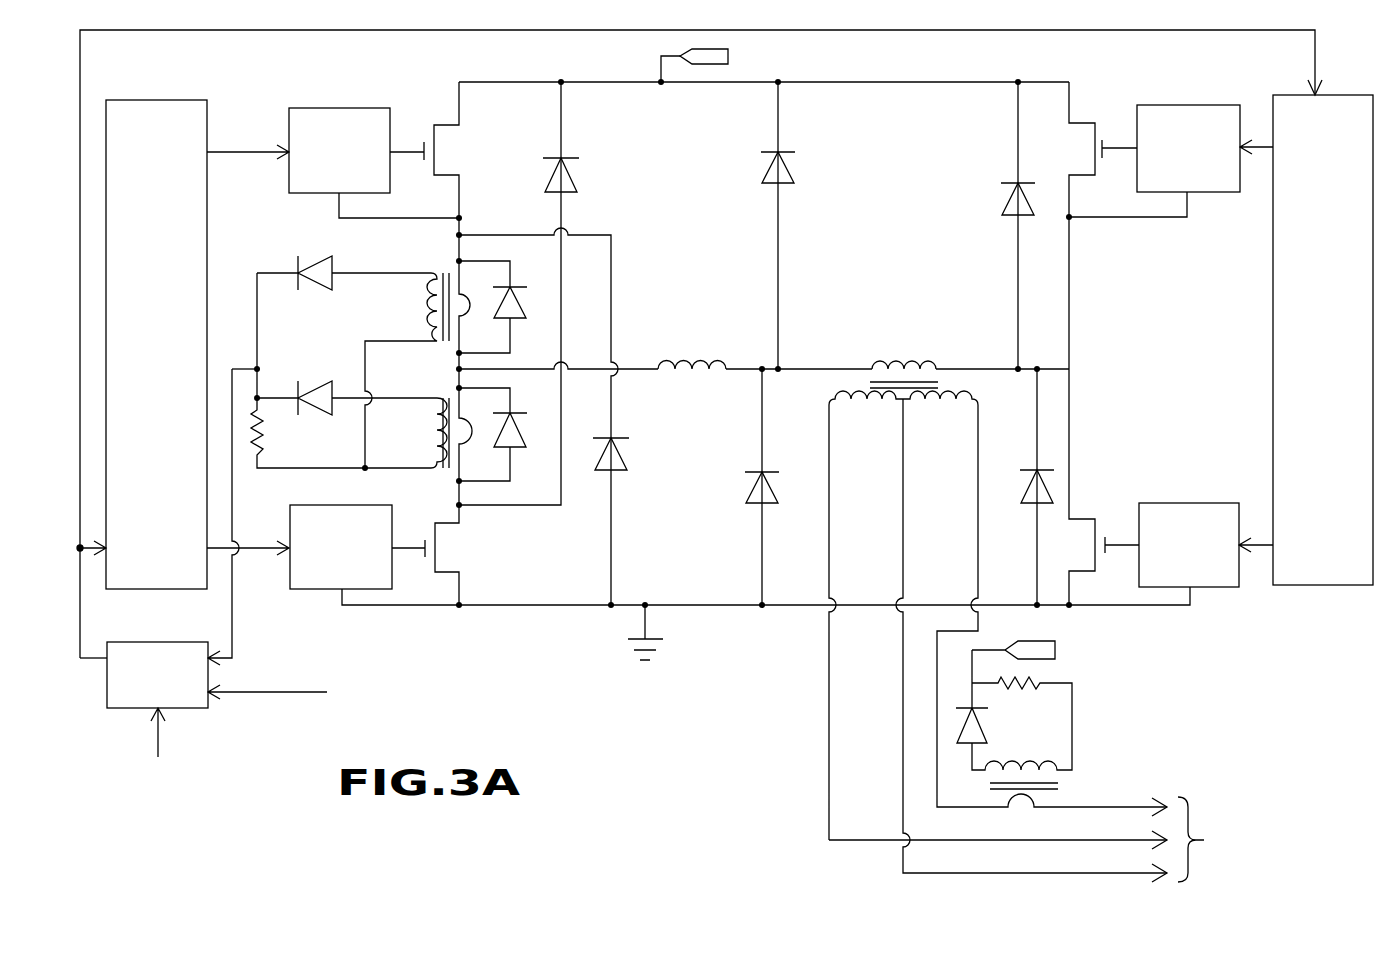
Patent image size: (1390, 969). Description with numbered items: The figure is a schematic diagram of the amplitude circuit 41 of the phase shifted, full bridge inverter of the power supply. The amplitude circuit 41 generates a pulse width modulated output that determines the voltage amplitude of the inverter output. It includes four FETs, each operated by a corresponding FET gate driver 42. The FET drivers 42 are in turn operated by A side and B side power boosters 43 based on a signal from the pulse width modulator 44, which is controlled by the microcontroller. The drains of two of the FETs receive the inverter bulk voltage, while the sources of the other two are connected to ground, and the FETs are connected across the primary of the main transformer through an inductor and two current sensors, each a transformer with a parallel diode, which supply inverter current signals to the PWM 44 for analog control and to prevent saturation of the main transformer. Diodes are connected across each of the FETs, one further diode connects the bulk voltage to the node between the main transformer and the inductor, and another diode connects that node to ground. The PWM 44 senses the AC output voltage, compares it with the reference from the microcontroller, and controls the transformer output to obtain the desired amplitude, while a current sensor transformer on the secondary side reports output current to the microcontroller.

The amplitude circuit 41 is at (726, 672).
The FET gate driver 42 is at (341, 108).
The side power booster 43 is at (170, 102).
The pulse width modulator 44 is at (215, 708).